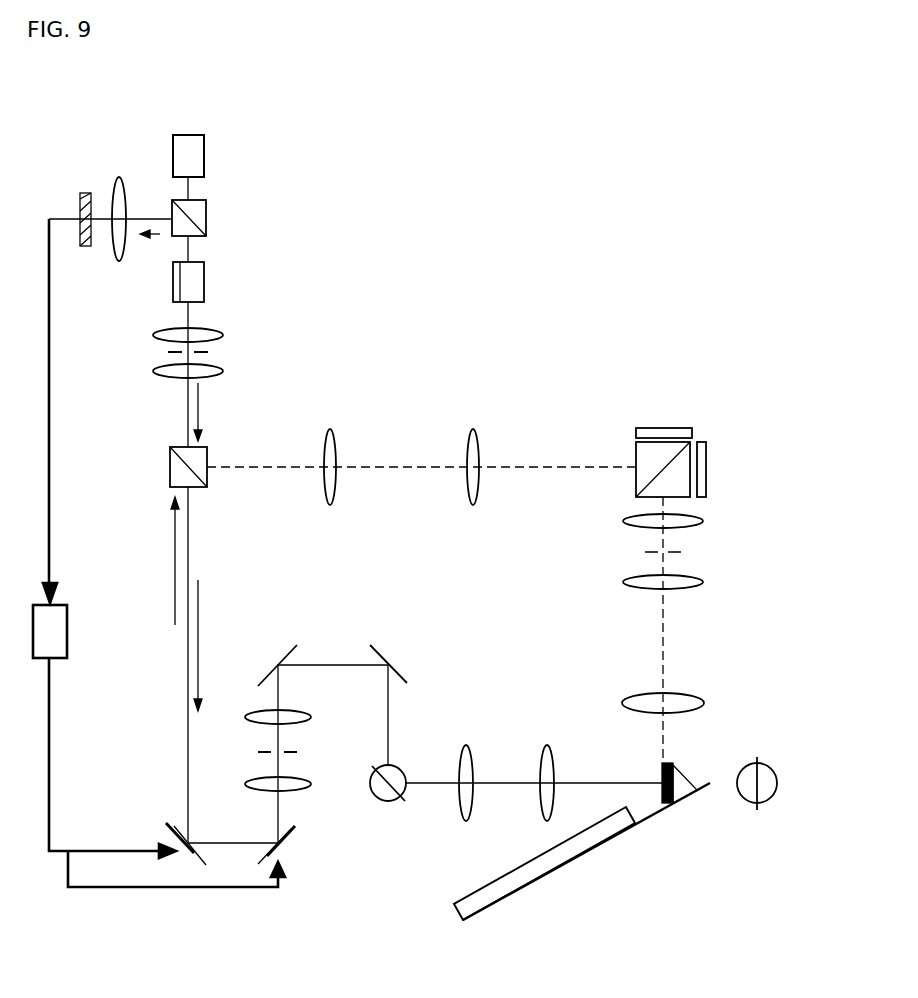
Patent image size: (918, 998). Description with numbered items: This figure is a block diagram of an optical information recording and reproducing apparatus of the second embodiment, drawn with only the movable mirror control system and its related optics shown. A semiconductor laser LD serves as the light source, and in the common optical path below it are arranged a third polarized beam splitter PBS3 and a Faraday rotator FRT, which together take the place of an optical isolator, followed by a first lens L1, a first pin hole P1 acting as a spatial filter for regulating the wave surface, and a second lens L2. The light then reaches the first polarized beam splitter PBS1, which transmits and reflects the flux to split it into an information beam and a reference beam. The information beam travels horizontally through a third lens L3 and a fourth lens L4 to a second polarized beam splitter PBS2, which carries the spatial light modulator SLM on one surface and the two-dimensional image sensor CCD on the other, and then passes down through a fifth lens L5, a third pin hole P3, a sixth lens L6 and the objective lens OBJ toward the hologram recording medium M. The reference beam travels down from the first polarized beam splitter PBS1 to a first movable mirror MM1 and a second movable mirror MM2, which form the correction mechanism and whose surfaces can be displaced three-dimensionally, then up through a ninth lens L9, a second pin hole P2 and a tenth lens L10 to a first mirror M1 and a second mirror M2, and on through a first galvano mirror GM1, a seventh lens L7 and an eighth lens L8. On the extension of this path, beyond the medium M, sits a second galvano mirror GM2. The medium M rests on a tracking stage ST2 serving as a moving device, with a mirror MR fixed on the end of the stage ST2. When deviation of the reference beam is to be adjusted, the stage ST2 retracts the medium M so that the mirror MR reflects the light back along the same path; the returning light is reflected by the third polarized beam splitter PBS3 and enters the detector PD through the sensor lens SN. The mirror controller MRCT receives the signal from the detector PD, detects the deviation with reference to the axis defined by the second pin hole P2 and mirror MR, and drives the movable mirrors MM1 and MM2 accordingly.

The semiconductor laser LD is at (188, 135).
The detector PD is at (83, 193).
The sensor lens SN is at (119, 177).
The third polarized beam splitter PBS3 is at (206, 221).
The Faraday rotator FRT is at (204, 283).
The first lens L1 is at (222, 335).
The first pin hole P1 is at (168, 352).
The second lens L2 is at (222, 371).
The first polarized beam splitter PBS1 is at (207, 457).
The third lens L3 is at (335, 440).
The fourth lens L4 is at (477, 440).
The spatial light modulator SLM is at (641, 428).
The second polarized beam splitter PBS2 is at (636, 486).
The two-dimensional image sensor CCD is at (706, 471).
The fifth lens L5 is at (703, 521).
The third pin hole P3 is at (681, 552).
The sixth lens L6 is at (704, 582).
The objective lens OBJ is at (700, 698).
The second galvano mirror GM2 is at (766, 765).
The mirror MR is at (660, 778).
The tracking stage ST2 is at (663, 808).
The hologram recording medium M is at (510, 876).
The seventh lens L7 is at (467, 745).
The eighth lens L8 is at (548, 745).
The first galvano mirror GM1 is at (413, 752).
The mirror controller MRCT is at (67, 636).
The first mirror M1 is at (263, 673).
The second mirror M2 is at (384, 659).
The tenth lens L10 is at (290, 712).
The second pin hole P2 is at (290, 752).
The ninth lens L9 is at (290, 780).
The first movable mirror MM1 is at (169, 832).
The second movable mirror MM2 is at (292, 842).